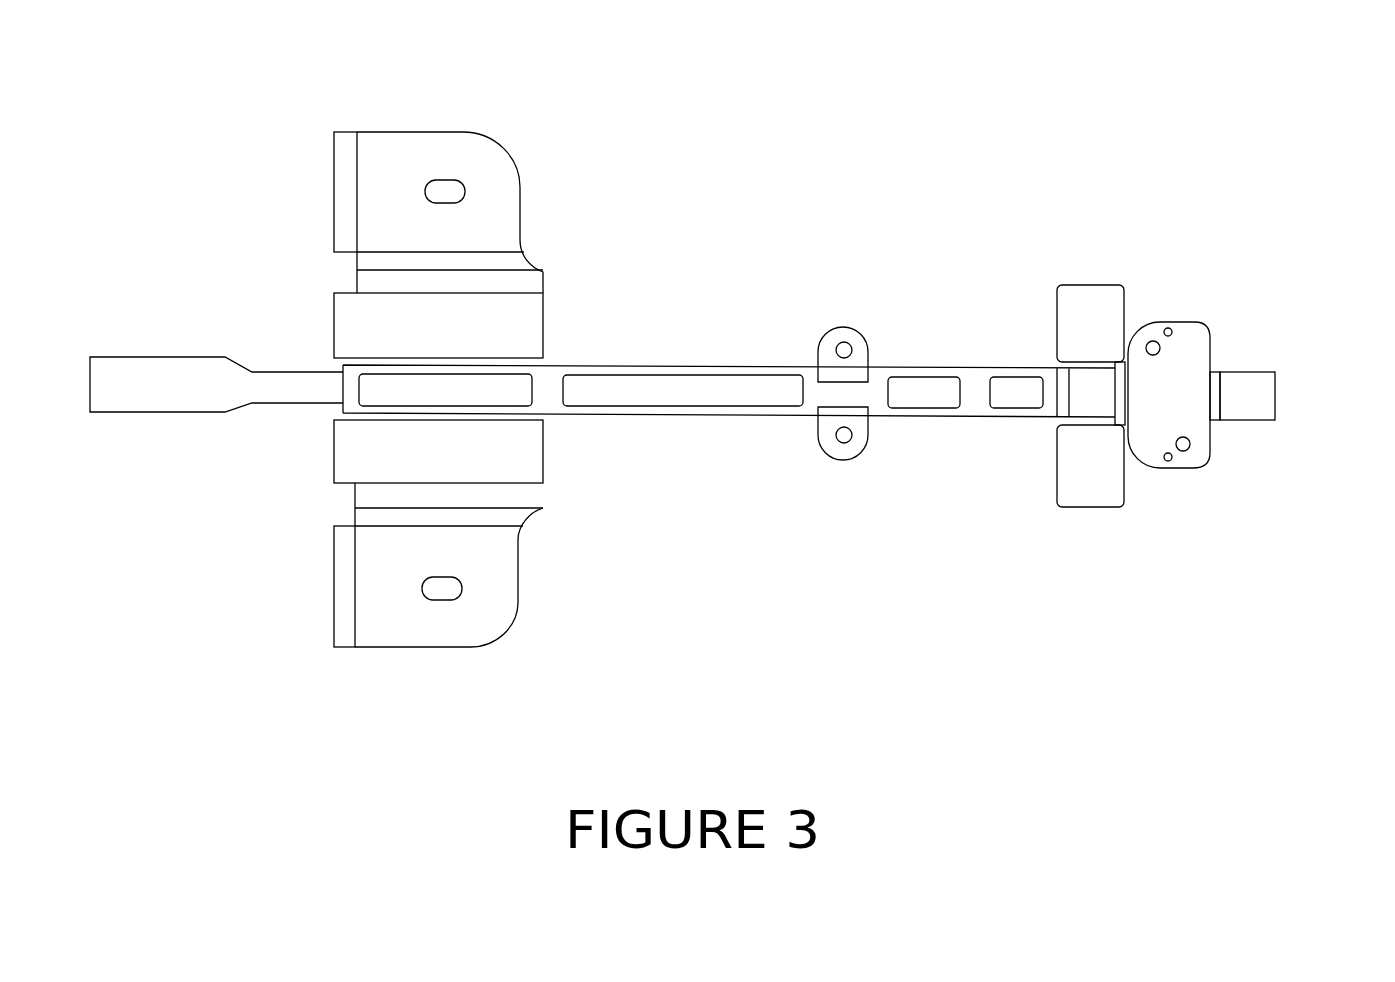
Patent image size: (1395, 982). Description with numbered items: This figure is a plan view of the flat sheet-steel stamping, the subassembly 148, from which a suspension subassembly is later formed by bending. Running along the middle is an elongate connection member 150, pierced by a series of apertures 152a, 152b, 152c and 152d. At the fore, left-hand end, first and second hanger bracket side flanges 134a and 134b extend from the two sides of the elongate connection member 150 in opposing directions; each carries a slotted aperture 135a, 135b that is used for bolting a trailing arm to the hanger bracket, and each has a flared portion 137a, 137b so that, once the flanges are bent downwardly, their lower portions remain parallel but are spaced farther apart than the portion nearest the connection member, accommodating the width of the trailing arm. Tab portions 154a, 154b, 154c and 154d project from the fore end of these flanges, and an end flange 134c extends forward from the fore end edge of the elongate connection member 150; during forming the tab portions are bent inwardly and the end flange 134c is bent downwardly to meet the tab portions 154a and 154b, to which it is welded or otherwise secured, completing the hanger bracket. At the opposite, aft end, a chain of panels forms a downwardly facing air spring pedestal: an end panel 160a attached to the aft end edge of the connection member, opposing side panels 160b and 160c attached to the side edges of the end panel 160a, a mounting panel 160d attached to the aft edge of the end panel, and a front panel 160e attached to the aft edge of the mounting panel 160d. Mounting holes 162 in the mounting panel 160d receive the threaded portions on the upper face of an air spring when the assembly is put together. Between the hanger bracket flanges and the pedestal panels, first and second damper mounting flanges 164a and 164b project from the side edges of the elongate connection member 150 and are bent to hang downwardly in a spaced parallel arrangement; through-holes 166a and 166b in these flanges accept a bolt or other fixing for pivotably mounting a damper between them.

The subassembly 148 is at (735, 233).
The elongate connection member 150 is at (673, 367).
The aperture 152a is at (533, 387).
The aperture 152b is at (620, 407).
The aperture 152c is at (908, 408).
The aperture 152d is at (1033, 377).
The tab portion 154a is at (333, 178).
The tab portion 154b is at (333, 328).
The tab portion 154c is at (332, 440).
The tab portion 154d is at (333, 572).
The first hanger bracket side flange 134a is at (523, 205).
The second hanger bracket side flange 134b is at (518, 572).
The end flange 134c is at (168, 413).
The slotted aperture 135a is at (463, 182).
The slotted aperture 135b is at (463, 598).
The flared portion 137a is at (525, 264).
The flared portion 137b is at (530, 495).
The end panel 160a is at (1128, 335).
The side panel 160b is at (1095, 387).
The side panel 160c is at (1127, 490).
The mounting panel 160d is at (1218, 370).
The front panel 160e is at (1262, 388).
The mounting holes 162 is at (1312, 518).
The first damper mounting flange 164a is at (855, 327).
The second damper mounting flange 164b is at (838, 460).
The through-hole 166a is at (853, 350).
The through-hole 166b is at (835, 436).